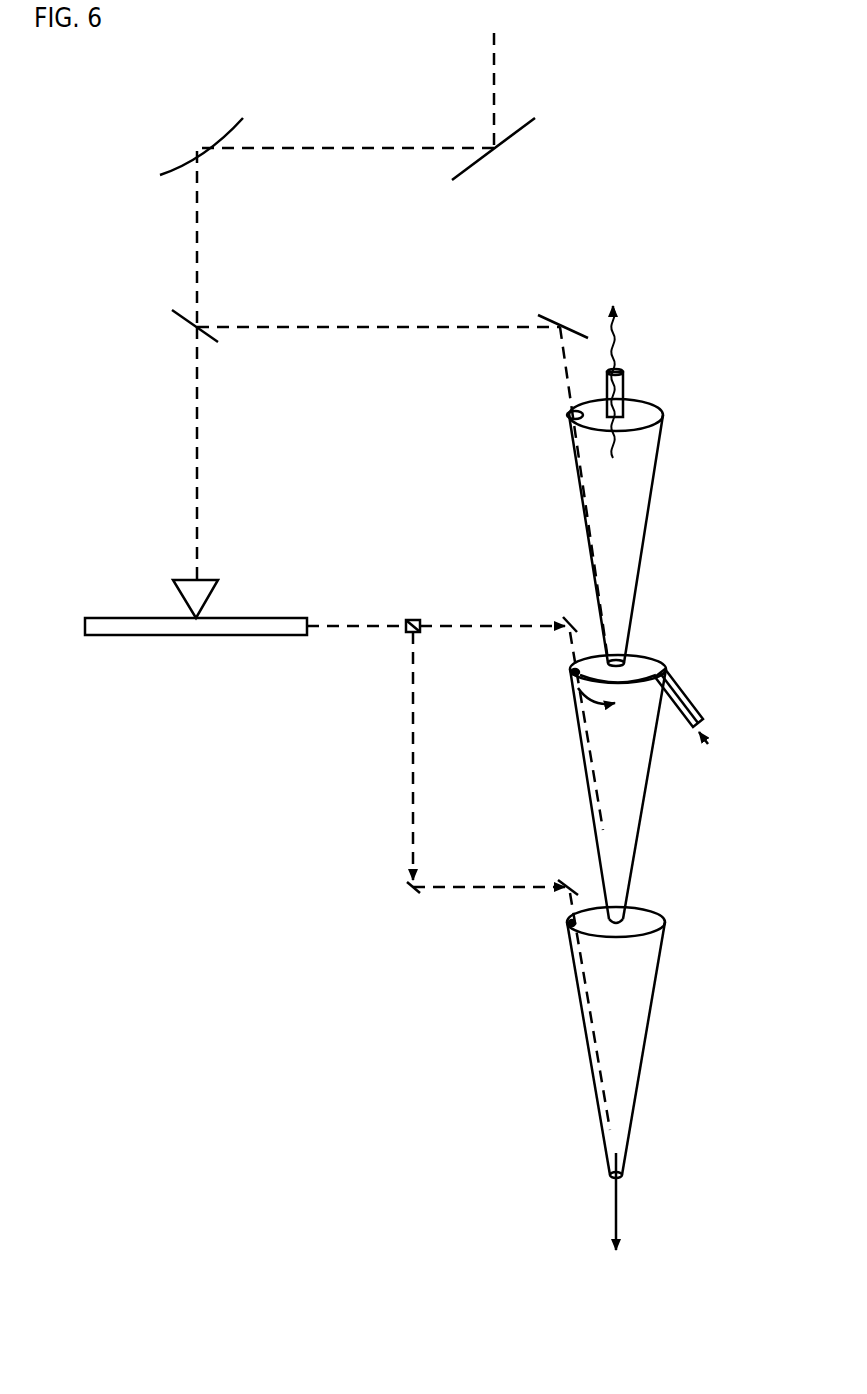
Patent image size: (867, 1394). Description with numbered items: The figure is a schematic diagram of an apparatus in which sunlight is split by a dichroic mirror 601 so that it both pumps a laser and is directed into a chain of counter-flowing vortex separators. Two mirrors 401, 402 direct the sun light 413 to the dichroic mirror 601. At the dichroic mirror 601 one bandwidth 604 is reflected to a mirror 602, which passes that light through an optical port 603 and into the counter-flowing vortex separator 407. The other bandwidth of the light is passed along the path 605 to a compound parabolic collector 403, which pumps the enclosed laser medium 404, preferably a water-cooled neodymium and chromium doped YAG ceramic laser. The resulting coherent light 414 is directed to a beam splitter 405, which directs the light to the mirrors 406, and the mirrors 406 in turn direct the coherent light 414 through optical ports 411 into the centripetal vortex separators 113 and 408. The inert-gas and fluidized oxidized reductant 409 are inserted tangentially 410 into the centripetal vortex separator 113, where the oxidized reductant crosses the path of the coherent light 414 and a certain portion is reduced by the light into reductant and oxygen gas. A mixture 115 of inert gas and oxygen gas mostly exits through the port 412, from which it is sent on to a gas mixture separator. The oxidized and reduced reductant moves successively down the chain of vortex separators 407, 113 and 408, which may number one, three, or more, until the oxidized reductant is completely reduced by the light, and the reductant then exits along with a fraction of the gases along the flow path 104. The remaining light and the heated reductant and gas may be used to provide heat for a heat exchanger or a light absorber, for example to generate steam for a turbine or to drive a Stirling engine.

The flow path 104 is at (616, 1222).
The centripetal vortex separator 113 is at (651, 791).
The mixture of inert gas and oxygen gas 115 is at (627, 330).
The mirror 401 is at (499, 153).
The mirror 402 is at (197, 145).
The compound parabolic collector 403 is at (170, 578).
The laser medium 404 is at (168, 637).
The beam splitter 405 is at (413, 619).
The mirrors 406 is at (565, 615).
The counter-flowing vortex separator 407 is at (651, 526).
The centripetal vortex separator 408 is at (649, 1041).
The inert-gas and fluidized oxidized reductant 409 is at (711, 742).
The tangential insertion 410 is at (678, 677).
The optical ports 411 is at (565, 673).
The port 412 is at (627, 385).
The sun light 413 is at (197, 252).
The coherent light 414 is at (360, 625).
The dichroic mirror 601 is at (192, 328).
The mirror 602 is at (563, 315).
The optical port 603 is at (565, 418).
The bandwidth 604 is at (375, 327).
The path 605 is at (197, 470).